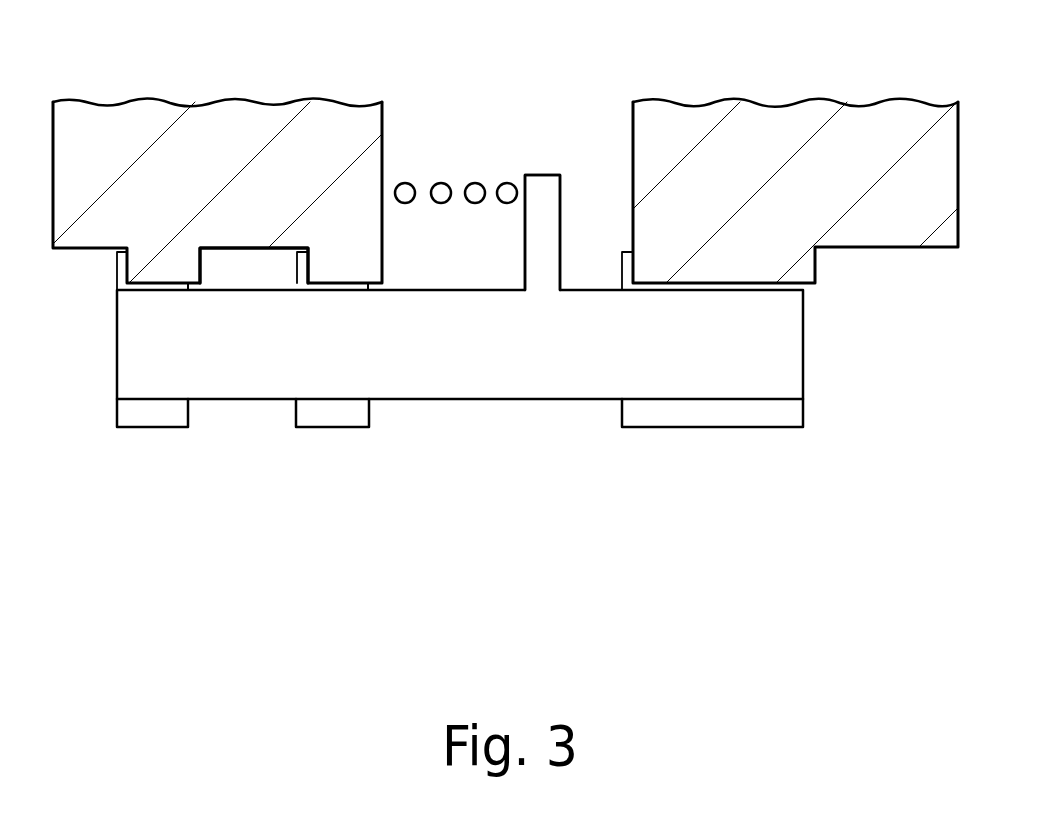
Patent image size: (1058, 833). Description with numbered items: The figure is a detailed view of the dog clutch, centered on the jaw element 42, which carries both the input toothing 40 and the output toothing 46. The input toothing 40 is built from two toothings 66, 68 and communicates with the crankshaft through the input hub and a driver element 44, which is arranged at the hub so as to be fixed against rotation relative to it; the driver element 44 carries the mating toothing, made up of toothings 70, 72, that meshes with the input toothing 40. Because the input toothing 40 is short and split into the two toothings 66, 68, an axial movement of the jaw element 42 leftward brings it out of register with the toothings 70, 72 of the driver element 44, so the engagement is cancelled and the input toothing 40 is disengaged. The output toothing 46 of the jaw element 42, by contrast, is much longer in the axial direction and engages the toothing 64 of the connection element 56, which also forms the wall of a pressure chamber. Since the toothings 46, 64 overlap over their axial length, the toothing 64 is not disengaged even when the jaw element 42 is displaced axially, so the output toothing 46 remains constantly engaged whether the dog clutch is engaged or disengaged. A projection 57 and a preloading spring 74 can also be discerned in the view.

The input toothing 40 is at (255, 478).
The jaw element 42 is at (517, 370).
The driver element 44 is at (329, 148).
The output toothing 46 is at (720, 415).
The connection element 56 is at (772, 135).
The projection 57 is at (540, 190).
The toothing 64 is at (653, 270).
The toothing 66 is at (160, 412).
The toothing 68 is at (336, 418).
The toothing 70 is at (150, 265).
The toothing 72 is at (335, 265).
The preloading spring 74 is at (441, 186).